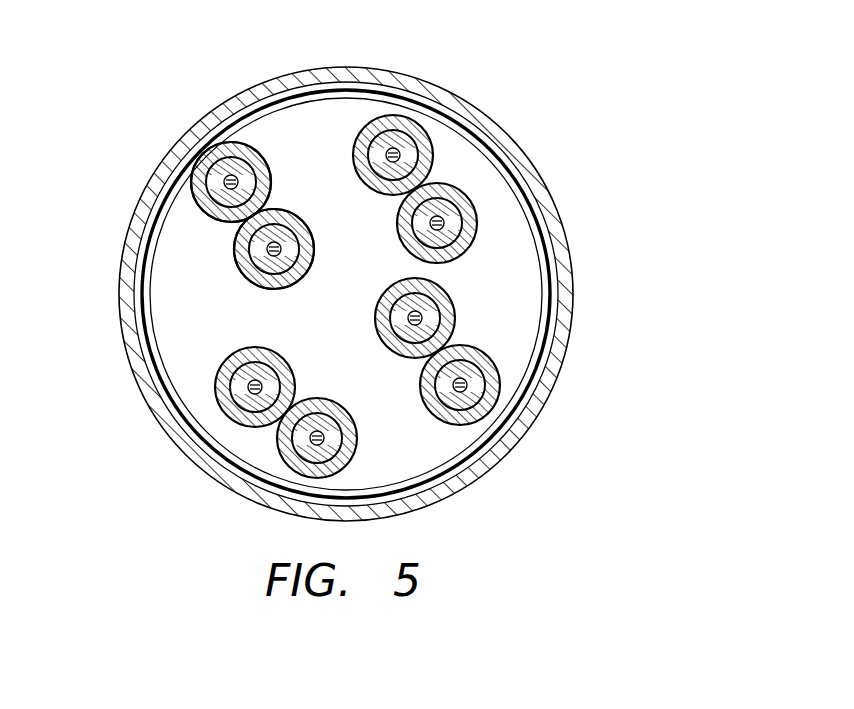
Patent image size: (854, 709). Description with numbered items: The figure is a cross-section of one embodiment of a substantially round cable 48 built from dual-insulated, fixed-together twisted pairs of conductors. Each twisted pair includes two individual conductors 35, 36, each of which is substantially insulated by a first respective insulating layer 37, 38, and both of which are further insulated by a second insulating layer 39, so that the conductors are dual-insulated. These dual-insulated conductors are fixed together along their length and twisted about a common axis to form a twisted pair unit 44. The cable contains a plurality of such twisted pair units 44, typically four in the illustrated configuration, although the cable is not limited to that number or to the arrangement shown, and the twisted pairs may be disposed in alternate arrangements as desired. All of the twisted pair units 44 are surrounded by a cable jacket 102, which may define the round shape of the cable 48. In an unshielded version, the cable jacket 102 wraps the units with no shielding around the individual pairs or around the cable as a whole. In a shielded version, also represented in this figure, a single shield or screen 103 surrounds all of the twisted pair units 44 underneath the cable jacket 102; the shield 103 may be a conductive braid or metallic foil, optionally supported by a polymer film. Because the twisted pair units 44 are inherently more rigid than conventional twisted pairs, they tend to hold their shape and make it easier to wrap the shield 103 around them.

The round cable 48 is at (574, 94).
The cable jacket 102 is at (554, 222).
The shield 103 is at (413, 472).
The conductor 35 is at (229, 180).
The conductor 36 is at (272, 247).
The first insulating layer 37 is at (417, 146).
The first insulating layer 38 is at (453, 216).
The second insulating layer 39 is at (216, 143).
The twisted pair unit 44 is at (204, 380).